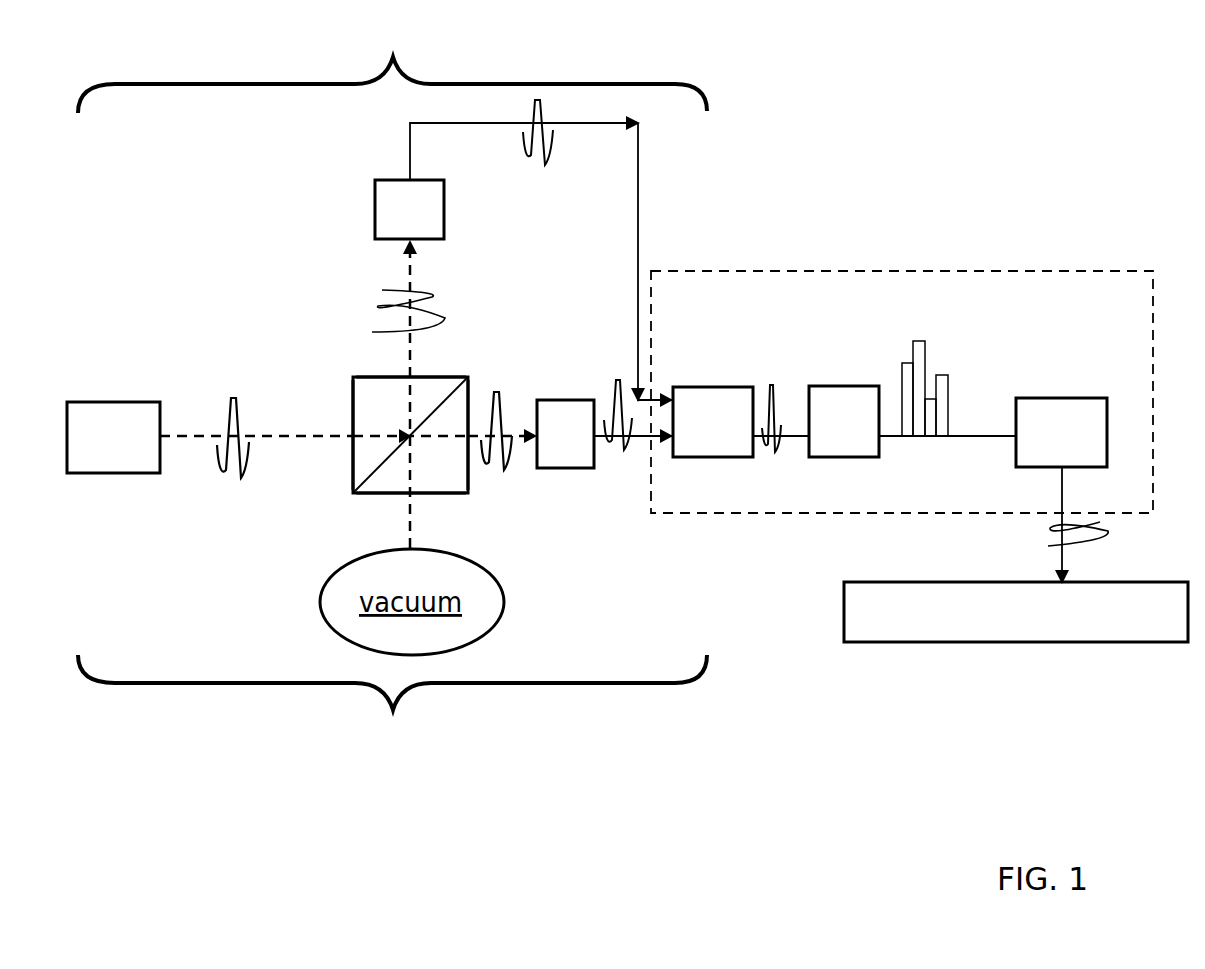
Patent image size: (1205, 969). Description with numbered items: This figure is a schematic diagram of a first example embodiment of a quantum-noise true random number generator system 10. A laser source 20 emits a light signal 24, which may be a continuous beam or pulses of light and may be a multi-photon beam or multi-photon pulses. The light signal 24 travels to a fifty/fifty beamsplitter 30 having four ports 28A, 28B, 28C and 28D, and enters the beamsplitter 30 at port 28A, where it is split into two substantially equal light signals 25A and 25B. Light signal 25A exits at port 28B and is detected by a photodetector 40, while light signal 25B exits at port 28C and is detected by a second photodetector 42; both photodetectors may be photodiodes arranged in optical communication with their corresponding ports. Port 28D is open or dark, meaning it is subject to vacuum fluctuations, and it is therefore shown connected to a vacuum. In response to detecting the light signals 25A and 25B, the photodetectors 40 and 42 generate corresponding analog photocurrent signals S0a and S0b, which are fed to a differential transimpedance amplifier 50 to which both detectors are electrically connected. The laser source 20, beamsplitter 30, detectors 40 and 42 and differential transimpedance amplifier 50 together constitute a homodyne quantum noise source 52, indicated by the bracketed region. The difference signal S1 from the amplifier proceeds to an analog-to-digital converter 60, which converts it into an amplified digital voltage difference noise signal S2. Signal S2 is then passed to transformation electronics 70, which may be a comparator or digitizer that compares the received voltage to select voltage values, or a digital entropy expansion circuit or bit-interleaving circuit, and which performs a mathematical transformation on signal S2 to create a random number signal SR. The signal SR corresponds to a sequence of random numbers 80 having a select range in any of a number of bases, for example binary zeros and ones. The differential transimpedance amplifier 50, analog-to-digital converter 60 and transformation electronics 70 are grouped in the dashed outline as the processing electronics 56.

The quantum-noise TRNG system 10 is at (895, 139).
The laser source 20 is at (113, 437).
The light signal 24 is at (240, 414).
The light signal 25A is at (430, 311).
The light signal 25B is at (501, 413).
The port 28A is at (352, 410).
The port 28B is at (447, 378).
The port 28C is at (470, 470).
The port 28D is at (437, 494).
The 50/50 beamsplitter 30 is at (352, 490).
The photodetector 40 is at (409, 209).
The photodetector 42 is at (565, 434).
The differential transimpedance amplifier 50 is at (713, 423).
The homodyne quantum noise source 52 is at (392, 408).
The processing electronics 56 is at (1030, 271).
The analog-to-digital converter 60 is at (844, 421).
The transformation electronics 70 is at (1061, 432).
The random number sequence 80 is at (844, 617).
The photocurrent signal S0a is at (548, 135).
The photocurrent signal S0b is at (620, 448).
The signal S1 is at (768, 400).
The amplified digital voltage difference signal S2 is at (952, 345).
The random number signal SR is at (1052, 545).